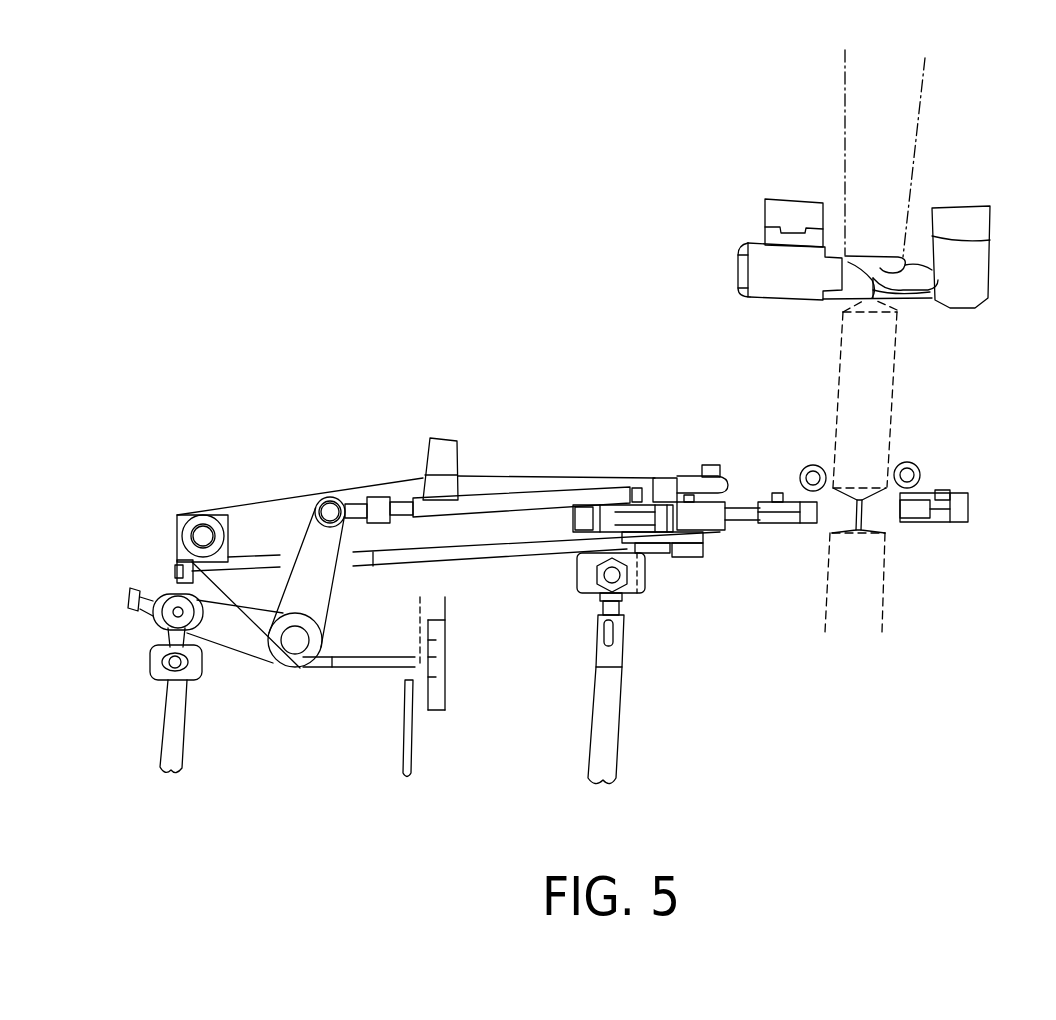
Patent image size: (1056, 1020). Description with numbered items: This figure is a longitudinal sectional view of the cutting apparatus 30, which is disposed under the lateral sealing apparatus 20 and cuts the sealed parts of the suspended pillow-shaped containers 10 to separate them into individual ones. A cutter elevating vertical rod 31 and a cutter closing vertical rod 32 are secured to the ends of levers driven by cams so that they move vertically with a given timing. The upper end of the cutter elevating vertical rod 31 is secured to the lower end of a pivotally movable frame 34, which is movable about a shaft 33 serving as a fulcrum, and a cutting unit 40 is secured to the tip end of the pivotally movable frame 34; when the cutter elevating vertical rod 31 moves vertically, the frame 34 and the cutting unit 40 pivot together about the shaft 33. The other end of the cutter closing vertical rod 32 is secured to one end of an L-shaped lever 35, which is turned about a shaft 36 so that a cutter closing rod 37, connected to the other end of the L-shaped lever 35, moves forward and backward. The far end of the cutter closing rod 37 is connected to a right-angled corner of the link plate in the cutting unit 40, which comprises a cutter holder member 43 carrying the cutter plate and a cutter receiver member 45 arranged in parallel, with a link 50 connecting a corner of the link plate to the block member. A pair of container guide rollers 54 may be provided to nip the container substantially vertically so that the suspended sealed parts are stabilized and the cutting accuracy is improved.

The pillow-shaped container 10 is at (897, 337).
The lateral sealing apparatus 20 is at (770, 177).
The cutting apparatus 30 is at (443, 397).
The cutter elevating vertical rod 31 is at (620, 735).
The cutter closing vertical rod 32 is at (187, 722).
The shaft 33 is at (200, 520).
The pivotally movable frame 34 is at (477, 563).
The L-shaped lever 35 is at (335, 587).
The shaft 36 is at (300, 665).
The cutter closing rod 37 is at (510, 488).
The cutting unit 40 is at (748, 378).
The cutter holder member 43 is at (955, 522).
The cutter receiver member 45 is at (760, 525).
The link 50 is at (737, 503).
The container guide roller 54 is at (890, 470).